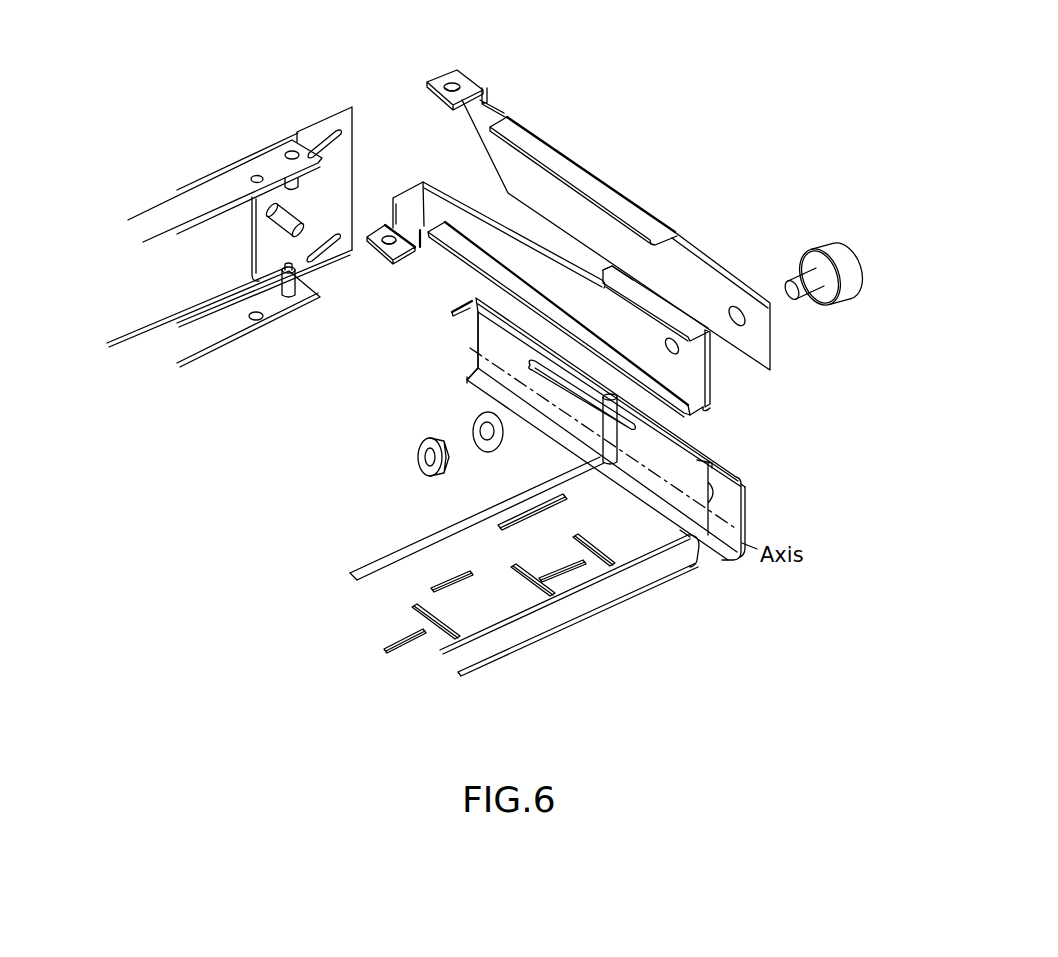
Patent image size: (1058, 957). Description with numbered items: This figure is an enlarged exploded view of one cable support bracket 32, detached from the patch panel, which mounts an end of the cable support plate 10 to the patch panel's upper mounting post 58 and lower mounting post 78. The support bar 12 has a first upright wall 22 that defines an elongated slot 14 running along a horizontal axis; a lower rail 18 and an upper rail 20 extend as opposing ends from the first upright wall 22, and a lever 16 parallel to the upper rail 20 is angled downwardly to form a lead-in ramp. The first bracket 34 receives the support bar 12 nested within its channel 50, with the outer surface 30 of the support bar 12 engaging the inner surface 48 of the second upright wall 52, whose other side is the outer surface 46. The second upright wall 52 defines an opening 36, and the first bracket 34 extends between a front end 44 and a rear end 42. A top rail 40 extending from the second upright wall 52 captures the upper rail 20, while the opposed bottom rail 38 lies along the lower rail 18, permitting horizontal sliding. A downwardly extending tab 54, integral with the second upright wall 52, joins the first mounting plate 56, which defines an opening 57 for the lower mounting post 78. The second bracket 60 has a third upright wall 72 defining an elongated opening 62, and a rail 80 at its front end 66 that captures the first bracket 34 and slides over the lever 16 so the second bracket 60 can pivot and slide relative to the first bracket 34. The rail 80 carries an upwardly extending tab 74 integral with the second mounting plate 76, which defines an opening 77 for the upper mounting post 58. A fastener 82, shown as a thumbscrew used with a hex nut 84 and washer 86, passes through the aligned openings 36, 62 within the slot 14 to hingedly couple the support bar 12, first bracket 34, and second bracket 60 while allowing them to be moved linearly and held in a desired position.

The cable support plate 10 is at (525, 628).
The support bar 12 is at (742, 566).
The elongated slot 14 is at (693, 480).
The lever 16 is at (450, 305).
The lower rail 18 is at (475, 370).
The upper rail 20 is at (603, 430).
The first upright wall 22 is at (480, 328).
The outer surface 30 is at (742, 487).
The cable support bracket 32 is at (805, 589).
The first bracket 34 is at (706, 427).
The opening 36 is at (668, 352).
The bottom rail 38 is at (453, 247).
The top rail 40 is at (633, 278).
The rear end 42 is at (710, 380).
The front end 44 is at (391, 199).
The outer surface 46 is at (711, 365).
The inner surface 48 is at (700, 413).
The channel 50 is at (646, 335).
The second upright wall 52 is at (500, 238).
The downwardly extending tab 54 is at (396, 200).
The first mounting plate 56 is at (382, 253).
The opening 57 is at (390, 228).
The upper mounting post 58 is at (353, 157).
The second bracket 60 is at (786, 343).
The opening 62 is at (725, 308).
The front end 66 is at (482, 147).
The third upright wall 72 is at (668, 255).
The upwardly extending tab 74 is at (486, 105).
The second mounting plate 76 is at (455, 72).
The opening 77 is at (437, 78).
The lower mounting post 78 is at (285, 295).
The rail 80 is at (563, 163).
The fastener 82 is at (835, 245).
The hex nut 84 is at (432, 437).
The washer 86 is at (475, 413).